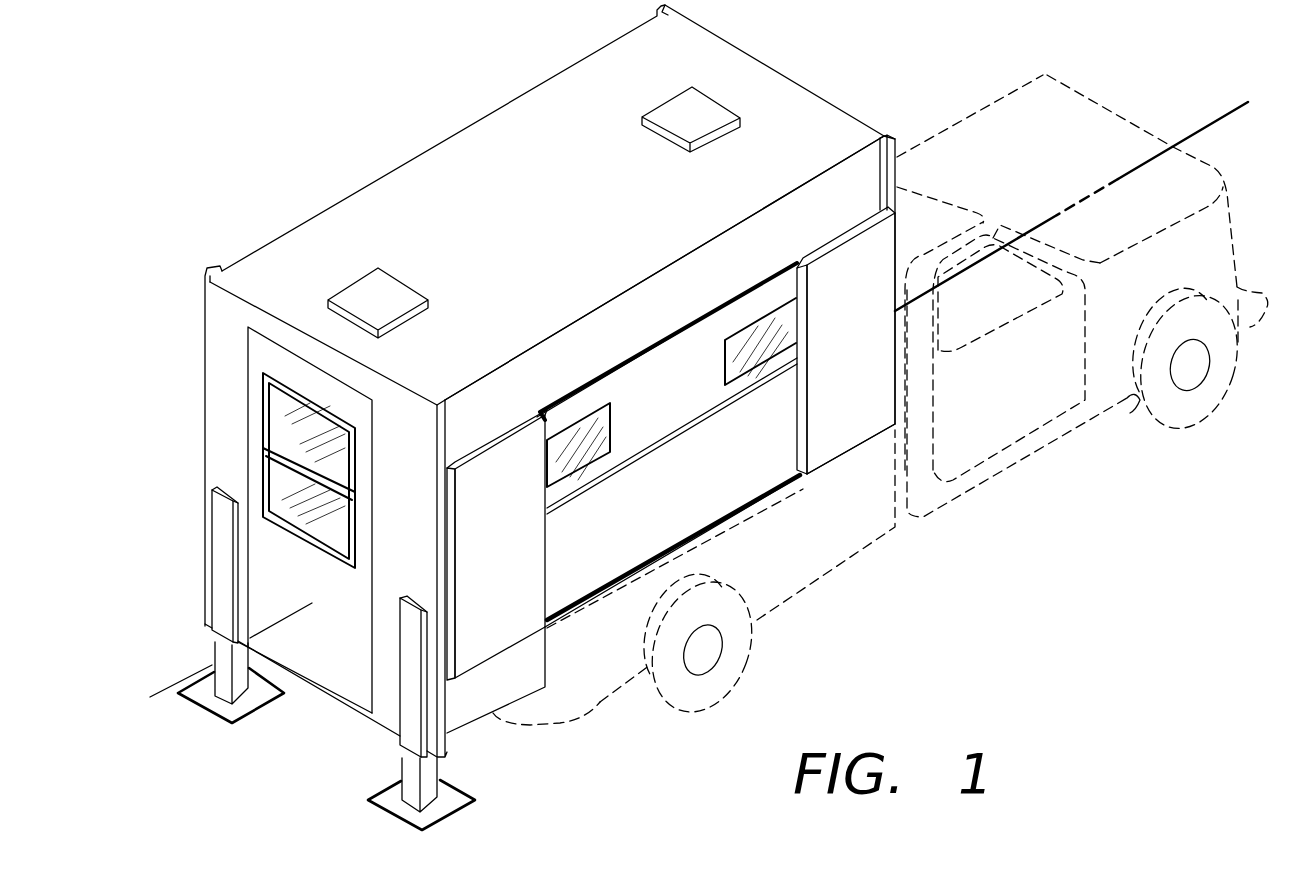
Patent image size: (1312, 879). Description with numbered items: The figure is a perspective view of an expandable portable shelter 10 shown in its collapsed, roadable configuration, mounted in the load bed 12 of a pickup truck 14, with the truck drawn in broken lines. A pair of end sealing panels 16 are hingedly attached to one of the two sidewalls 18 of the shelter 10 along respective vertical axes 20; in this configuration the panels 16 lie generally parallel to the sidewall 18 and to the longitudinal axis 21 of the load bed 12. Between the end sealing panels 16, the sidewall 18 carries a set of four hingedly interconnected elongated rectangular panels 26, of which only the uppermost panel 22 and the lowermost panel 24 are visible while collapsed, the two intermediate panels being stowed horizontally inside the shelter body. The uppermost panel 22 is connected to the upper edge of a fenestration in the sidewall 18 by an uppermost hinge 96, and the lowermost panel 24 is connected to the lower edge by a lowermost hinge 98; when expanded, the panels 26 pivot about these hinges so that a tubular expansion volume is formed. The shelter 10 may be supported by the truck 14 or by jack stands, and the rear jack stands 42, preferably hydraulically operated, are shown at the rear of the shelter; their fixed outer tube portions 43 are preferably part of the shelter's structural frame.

The expandable portable shelter 10 is at (352, 146).
The load bed 12 is at (841, 555).
The pickup truck 14 is at (1163, 178).
The end sealing panels 16 is at (525, 590).
The sidewall 18 is at (785, 258).
The vertical axes 20 is at (448, 465).
The longitudinal axis 21 is at (1244, 103).
The uppermost panel 22 is at (698, 408).
The lowermost panel 24 is at (698, 515).
The hingedly interconnected elongated rectangular panels 26 is at (505, 716).
The rear jack stands 42 is at (407, 748).
The fixed outer tube portions 43 is at (415, 707).
The uppermost hinge 96 is at (745, 296).
The lowermost hinge 98 is at (645, 567).